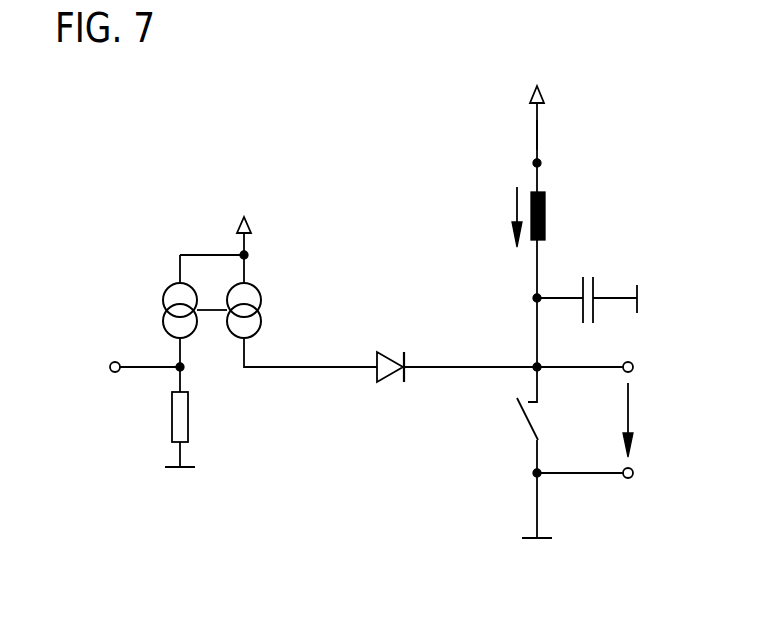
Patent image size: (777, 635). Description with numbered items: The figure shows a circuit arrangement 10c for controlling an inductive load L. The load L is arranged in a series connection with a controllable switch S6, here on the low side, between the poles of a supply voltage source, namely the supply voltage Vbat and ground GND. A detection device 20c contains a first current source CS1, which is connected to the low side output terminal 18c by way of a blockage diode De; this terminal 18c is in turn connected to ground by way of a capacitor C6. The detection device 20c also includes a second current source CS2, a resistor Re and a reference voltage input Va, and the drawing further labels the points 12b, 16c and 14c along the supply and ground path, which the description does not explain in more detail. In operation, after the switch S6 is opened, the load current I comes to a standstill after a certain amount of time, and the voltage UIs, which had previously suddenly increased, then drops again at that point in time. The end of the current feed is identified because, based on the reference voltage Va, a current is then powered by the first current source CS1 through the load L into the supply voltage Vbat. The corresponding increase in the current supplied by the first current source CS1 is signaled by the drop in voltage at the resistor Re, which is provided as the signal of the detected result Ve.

The circuit arrangement 10c is at (383, 115).
The detection device 20c is at (168, 197).
The supply line 12b is at (534, 138).
The supply node 16c is at (541, 163).
The low side output terminal 18c is at (530, 363).
The ground line 14c is at (537, 508).
The inductive load L is at (547, 215).
The capacitor C6 is at (597, 283).
The first current source CS1 is at (262, 322).
The second current source CS2 is at (163, 298).
The resistor Re is at (170, 418).
The blockage diode De is at (387, 377).
The controllable switch S6 is at (525, 417).
The reference voltage Va is at (245, 217).
The detected result signal Ve is at (142, 348).
The supply voltage Vbat is at (537, 107).
The ground GND is at (538, 528).
The voltage Uls UIs is at (648, 420).
The load current I is at (513, 215).